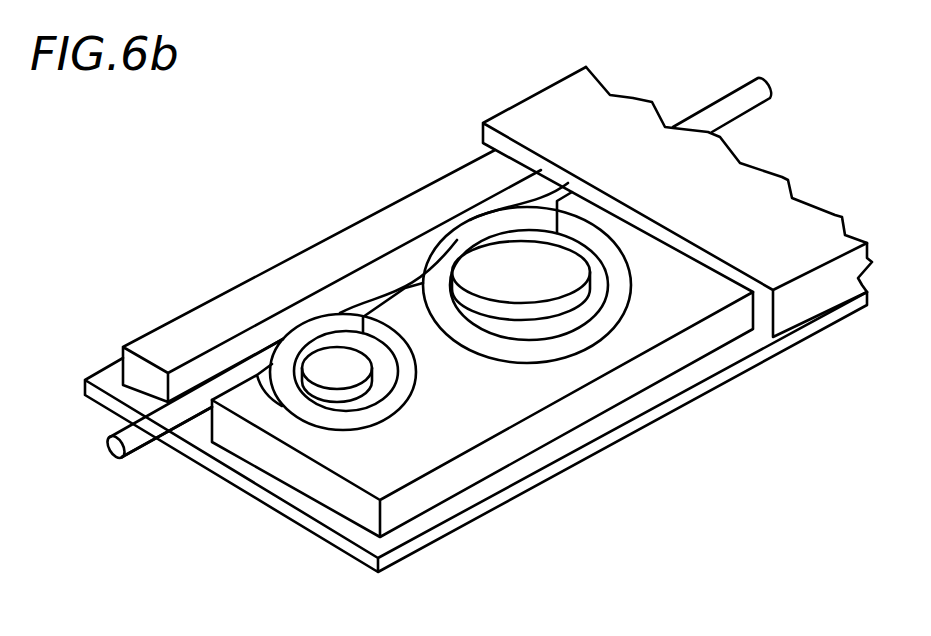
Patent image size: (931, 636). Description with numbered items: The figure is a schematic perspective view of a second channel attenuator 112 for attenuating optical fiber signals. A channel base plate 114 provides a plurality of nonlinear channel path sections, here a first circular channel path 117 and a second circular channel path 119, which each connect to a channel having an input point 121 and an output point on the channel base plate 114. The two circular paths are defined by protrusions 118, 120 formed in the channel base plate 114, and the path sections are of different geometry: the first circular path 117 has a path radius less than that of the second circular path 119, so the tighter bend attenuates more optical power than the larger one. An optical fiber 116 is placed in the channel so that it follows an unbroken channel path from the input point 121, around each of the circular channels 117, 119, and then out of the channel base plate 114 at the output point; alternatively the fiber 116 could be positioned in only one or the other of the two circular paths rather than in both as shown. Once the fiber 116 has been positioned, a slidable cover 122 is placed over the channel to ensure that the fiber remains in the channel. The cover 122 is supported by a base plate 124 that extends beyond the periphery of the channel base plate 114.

The second channel attenuator 112 is at (174, 280).
The channel base plate 114 is at (363, 463).
The optical fiber 116 is at (113, 458).
The first circular channel path 117 is at (427, 392).
The protrusion 118 is at (315, 382).
The second circular channel path 119 is at (638, 326).
The protrusion 120 is at (497, 288).
The input point 121 is at (193, 430).
The slidable cover 122 is at (652, 198).
The base plate 124 is at (400, 533).